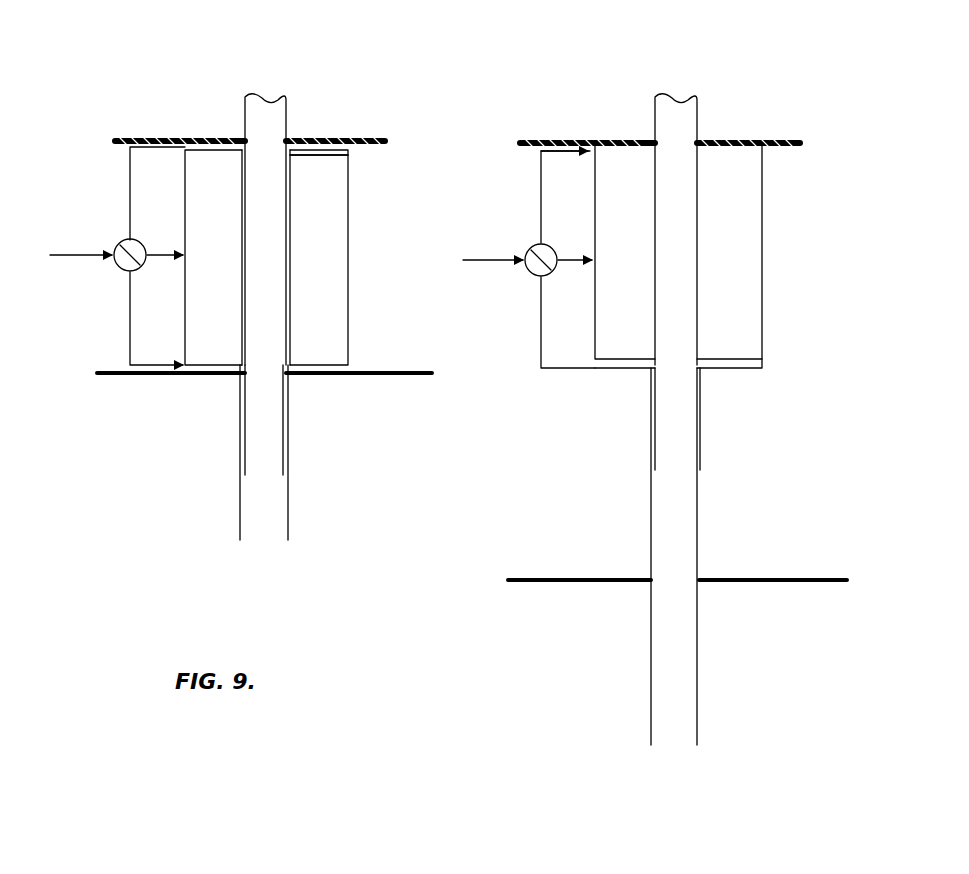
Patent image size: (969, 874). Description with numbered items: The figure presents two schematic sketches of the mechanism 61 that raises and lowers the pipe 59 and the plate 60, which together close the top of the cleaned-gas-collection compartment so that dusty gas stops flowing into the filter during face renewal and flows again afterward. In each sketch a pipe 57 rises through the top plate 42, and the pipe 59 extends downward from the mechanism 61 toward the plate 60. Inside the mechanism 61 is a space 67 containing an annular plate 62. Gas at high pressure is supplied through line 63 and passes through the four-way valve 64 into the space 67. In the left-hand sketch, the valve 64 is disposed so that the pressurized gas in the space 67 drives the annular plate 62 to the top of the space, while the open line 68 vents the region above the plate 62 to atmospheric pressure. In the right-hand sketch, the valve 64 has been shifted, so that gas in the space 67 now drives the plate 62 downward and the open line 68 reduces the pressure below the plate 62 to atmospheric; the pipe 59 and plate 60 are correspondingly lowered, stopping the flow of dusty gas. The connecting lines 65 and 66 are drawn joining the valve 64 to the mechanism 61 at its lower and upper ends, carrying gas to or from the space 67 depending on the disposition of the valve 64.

The top plate 42 is at (168, 136).
The pipe 57 is at (288, 113).
The pipe 59 is at (290, 505).
The plate 60 is at (390, 378).
The mechanism 61 is at (348, 287).
The annular plate 62 is at (308, 158).
The line 63 is at (73, 257).
The four-way valve 64 is at (120, 243).
The lower supply line 65 is at (128, 327).
The upper supply line 66 is at (130, 180).
The space 67 is at (222, 282).
The open line 68 is at (163, 250).